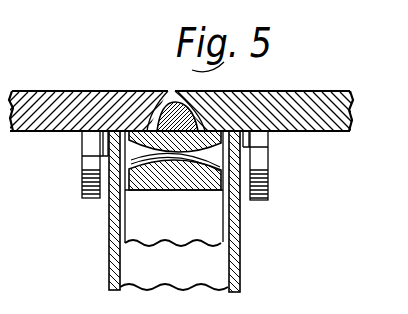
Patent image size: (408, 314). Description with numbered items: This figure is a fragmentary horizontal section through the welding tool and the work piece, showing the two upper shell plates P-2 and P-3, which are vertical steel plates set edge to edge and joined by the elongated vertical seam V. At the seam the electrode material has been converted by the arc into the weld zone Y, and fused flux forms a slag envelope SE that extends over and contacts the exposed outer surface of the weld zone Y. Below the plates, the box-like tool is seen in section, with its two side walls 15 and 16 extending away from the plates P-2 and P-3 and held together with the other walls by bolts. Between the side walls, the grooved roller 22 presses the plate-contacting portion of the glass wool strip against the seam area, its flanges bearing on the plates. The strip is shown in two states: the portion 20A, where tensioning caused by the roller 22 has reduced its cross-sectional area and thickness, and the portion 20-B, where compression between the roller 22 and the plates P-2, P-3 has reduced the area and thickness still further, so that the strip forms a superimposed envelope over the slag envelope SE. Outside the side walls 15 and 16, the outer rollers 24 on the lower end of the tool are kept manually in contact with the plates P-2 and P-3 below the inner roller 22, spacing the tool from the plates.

The upper shell plate P-2 is at (50, 90).
The upper shell plate P-3 is at (319, 97).
The vertical seam V is at (173, 99).
The weld zone Y is at (166, 112).
The slag envelope SE is at (200, 131).
The compressed strip portion 20-B is at (142, 139).
The tensioned strip portion 20A is at (138, 192).
The grooved roller 22 is at (268, 147).
The outer rollers 24 is at (82, 189).
The side wall 15 is at (113, 259).
The side wall 16 is at (240, 272).